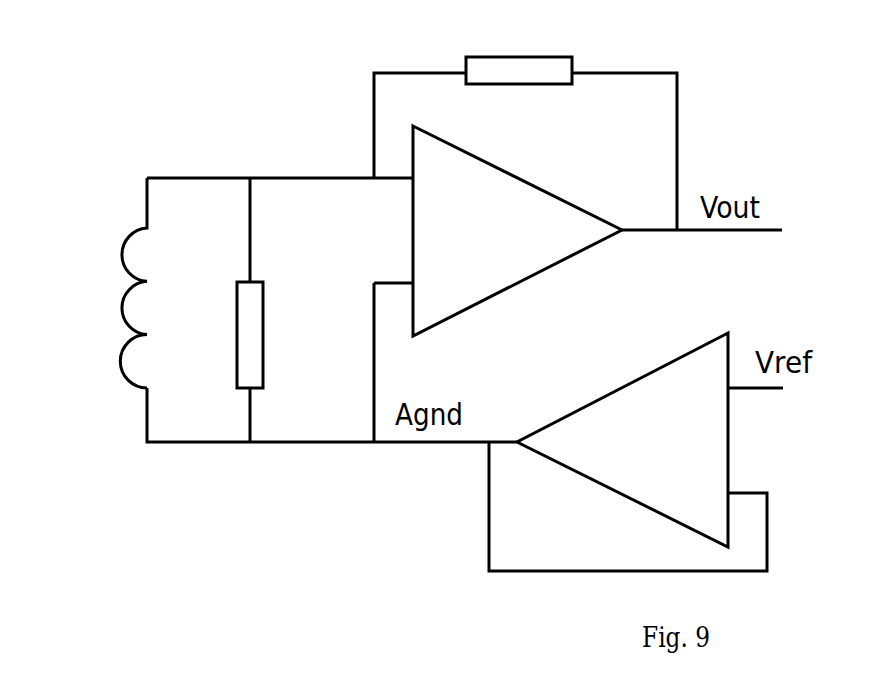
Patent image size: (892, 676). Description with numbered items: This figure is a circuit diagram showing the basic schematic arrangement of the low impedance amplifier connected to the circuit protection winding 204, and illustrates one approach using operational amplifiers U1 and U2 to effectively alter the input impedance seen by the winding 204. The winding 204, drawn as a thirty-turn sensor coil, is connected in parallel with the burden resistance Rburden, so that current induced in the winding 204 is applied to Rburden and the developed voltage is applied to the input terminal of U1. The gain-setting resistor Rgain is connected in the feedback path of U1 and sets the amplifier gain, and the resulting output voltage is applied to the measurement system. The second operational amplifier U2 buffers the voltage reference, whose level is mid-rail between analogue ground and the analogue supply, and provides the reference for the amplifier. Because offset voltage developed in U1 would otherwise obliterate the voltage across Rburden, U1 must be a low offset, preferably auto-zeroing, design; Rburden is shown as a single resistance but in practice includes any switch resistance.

The circuit protection winding 204 is at (124, 223).
The burden resistance Rburden is at (269, 332).
The gain resistor Rgain is at (519, 51).
The operational amplifier U1 is at (517, 231).
The operational amplifier U2 is at (622, 440).